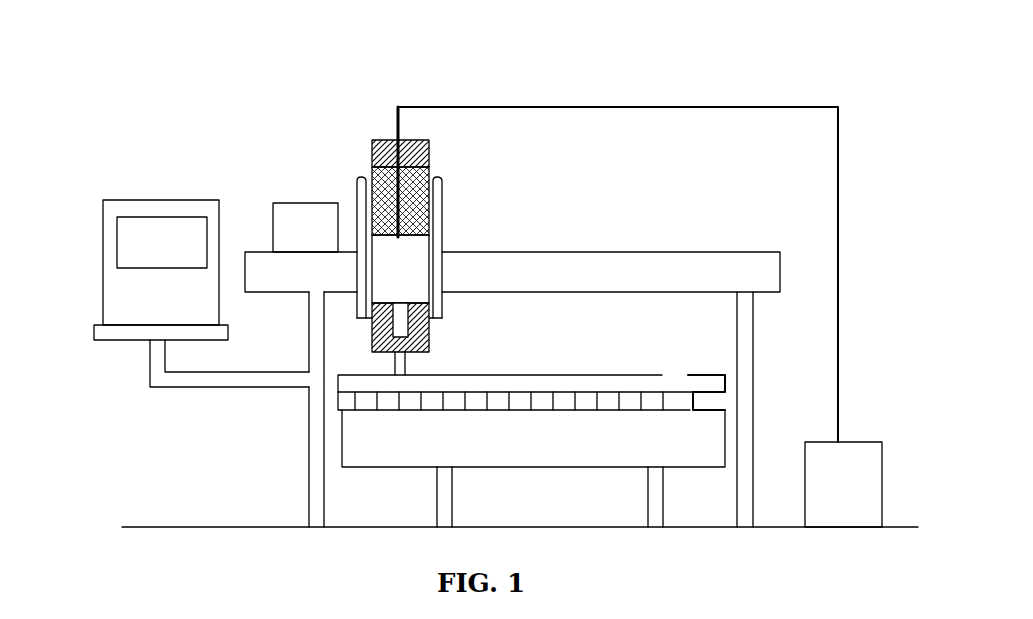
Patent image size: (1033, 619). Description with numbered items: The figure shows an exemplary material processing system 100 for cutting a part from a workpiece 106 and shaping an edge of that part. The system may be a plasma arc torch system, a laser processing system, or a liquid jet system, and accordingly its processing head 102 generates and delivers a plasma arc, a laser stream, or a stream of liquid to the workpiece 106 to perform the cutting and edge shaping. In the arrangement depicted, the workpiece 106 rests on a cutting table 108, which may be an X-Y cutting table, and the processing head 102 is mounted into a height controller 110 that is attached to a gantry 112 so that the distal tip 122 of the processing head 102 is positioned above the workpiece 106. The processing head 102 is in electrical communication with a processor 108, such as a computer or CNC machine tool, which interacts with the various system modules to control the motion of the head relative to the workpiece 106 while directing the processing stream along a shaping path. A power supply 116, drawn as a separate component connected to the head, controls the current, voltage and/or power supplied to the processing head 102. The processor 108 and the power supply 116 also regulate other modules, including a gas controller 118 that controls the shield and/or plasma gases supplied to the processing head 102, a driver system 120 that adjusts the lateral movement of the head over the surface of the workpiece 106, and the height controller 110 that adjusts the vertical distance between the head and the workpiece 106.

The material processing system 100 is at (280, 47).
The processing head 102 is at (403, 367).
The workpiece 106 is at (660, 390).
The processor 108 is at (102, 283).
The height controller 110 is at (372, 152).
The gantry 112 is at (578, 264).
The power supply 116 is at (862, 480).
The gas controller 118 is at (440, 218).
The driver system 120 is at (271, 213).
The distal tip 122 is at (388, 362).